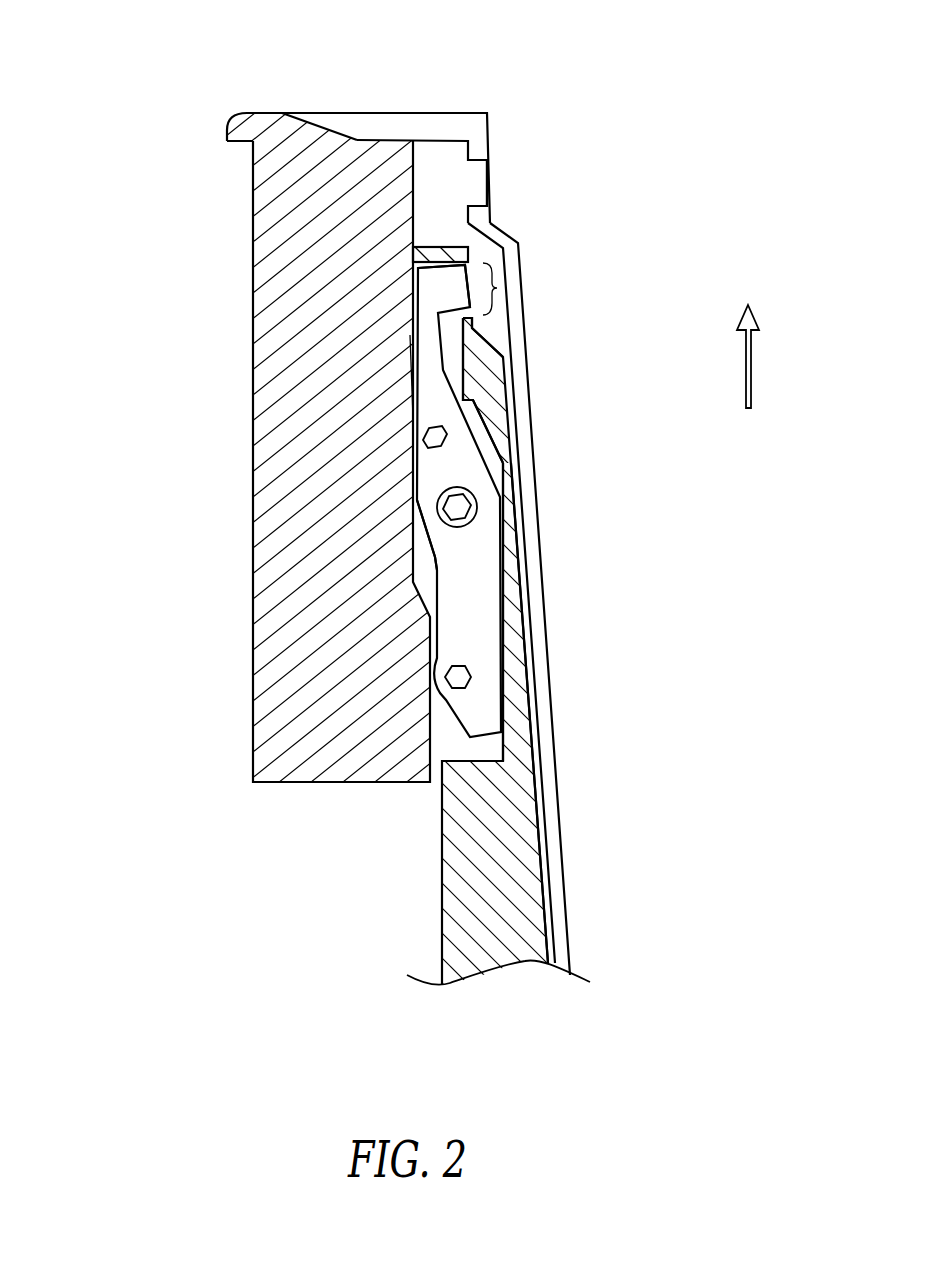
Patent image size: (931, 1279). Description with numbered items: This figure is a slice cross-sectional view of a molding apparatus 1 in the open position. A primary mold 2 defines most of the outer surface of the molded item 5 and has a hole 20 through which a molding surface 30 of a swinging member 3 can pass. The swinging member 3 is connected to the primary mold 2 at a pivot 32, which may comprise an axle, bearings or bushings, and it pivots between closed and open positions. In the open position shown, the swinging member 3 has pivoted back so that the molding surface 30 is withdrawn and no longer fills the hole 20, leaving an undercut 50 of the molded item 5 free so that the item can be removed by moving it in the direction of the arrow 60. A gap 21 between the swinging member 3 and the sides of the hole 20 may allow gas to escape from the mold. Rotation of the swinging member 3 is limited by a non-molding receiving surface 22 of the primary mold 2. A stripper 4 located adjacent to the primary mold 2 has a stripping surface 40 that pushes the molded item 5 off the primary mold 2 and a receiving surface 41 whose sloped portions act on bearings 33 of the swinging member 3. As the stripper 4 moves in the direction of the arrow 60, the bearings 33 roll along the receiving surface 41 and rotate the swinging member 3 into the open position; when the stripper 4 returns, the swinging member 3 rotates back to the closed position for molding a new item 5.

The molding apparatus 1 is at (166, 139).
The primary mold 2 is at (437, 252).
The swinging member 3 is at (453, 470).
The stripper 4 is at (295, 470).
The molded item 5 is at (503, 240).
The hole 20 is at (497, 288).
The gap 21 is at (450, 353).
The receiving surface 22 is at (505, 648).
The molding surface 30 is at (468, 292).
The pivot 32 is at (460, 507).
The bearings 33 is at (435, 436).
The stripping surface 40 is at (327, 127).
The receiving surface 41 is at (410, 549).
The undercut 50 is at (492, 183).
The arrow 60 is at (767, 356).